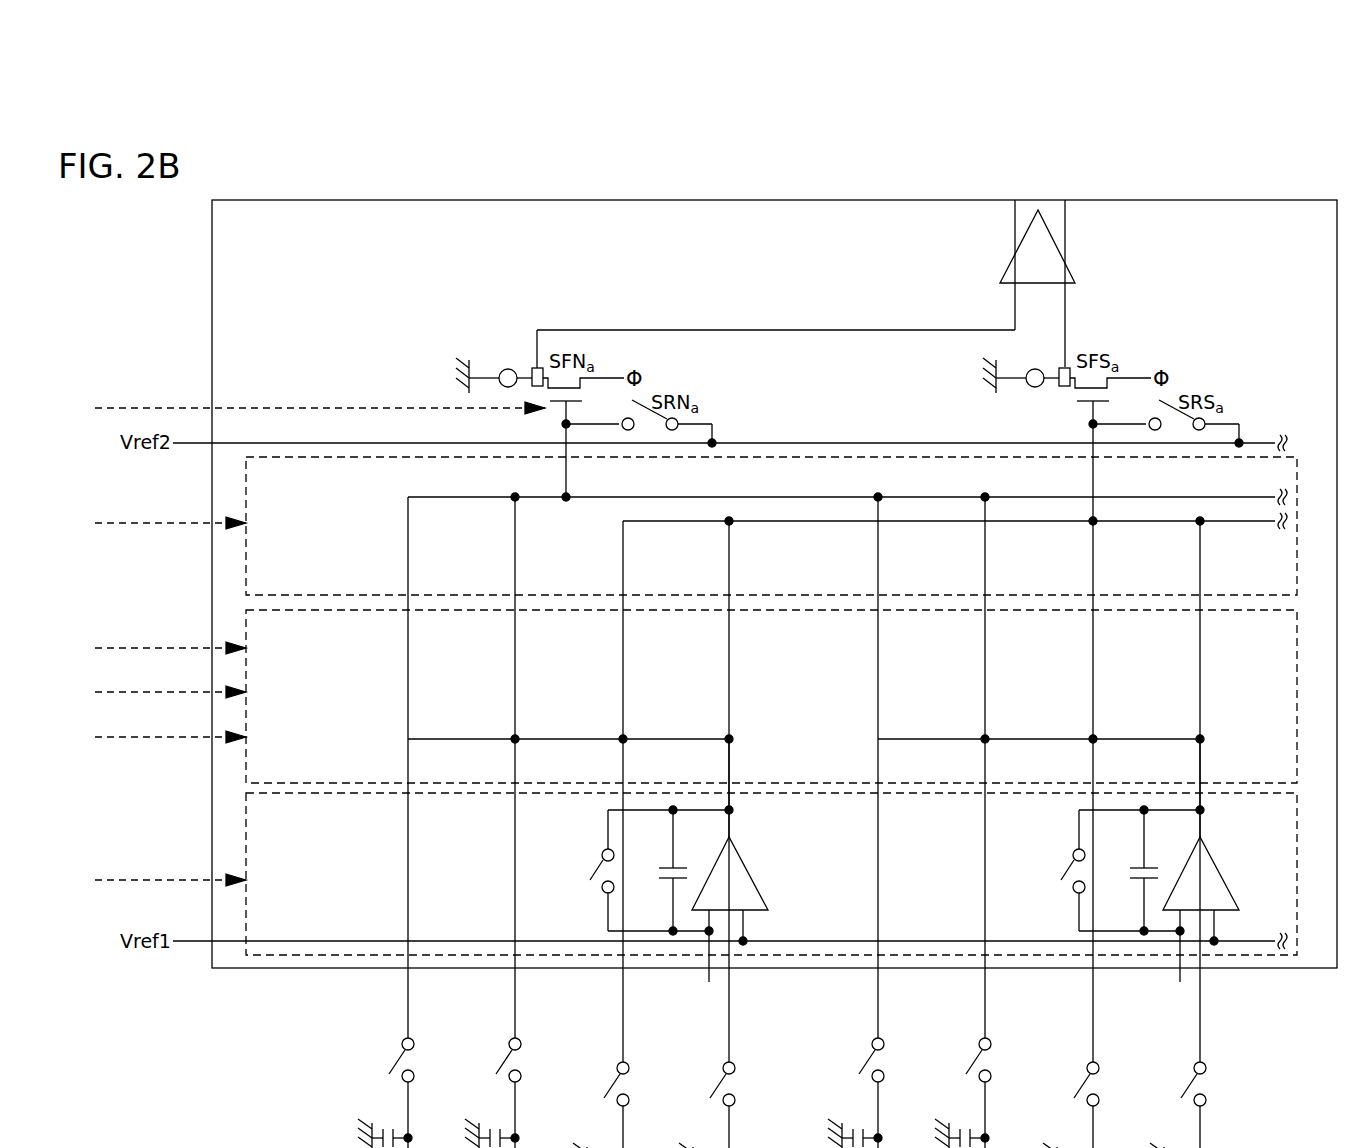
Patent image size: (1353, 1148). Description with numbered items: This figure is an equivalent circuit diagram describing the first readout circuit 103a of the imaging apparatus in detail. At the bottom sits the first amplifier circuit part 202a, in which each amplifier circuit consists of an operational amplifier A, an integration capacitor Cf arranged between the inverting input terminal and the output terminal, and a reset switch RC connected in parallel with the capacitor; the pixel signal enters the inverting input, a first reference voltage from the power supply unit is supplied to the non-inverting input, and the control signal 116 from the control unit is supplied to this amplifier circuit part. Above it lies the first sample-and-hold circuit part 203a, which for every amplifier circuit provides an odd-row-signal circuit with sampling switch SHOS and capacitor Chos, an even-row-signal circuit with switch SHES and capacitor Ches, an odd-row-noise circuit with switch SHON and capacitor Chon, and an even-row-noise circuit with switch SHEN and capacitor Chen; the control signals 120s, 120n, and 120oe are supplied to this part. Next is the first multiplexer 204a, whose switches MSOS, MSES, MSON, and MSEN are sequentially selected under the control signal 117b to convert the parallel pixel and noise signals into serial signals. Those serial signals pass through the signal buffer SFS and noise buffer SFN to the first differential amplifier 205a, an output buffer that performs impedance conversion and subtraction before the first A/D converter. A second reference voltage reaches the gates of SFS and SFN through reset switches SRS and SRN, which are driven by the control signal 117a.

The first readout circuit 103a is at (336, 200).
The first differential amplifier 205a is at (1077, 313).
The control signal 117a is at (136, 410).
The control signal 117b is at (136, 523).
The first multiplexer 204a is at (246, 475).
The control signal 120oe is at (140, 648).
The control signal 120n is at (154, 693).
The control signal 120s is at (154, 738).
The first sample-and-hold circuit part 203a is at (246, 765).
The first amplifier circuit part 202a is at (246, 813).
The control signal 116 is at (140, 881).